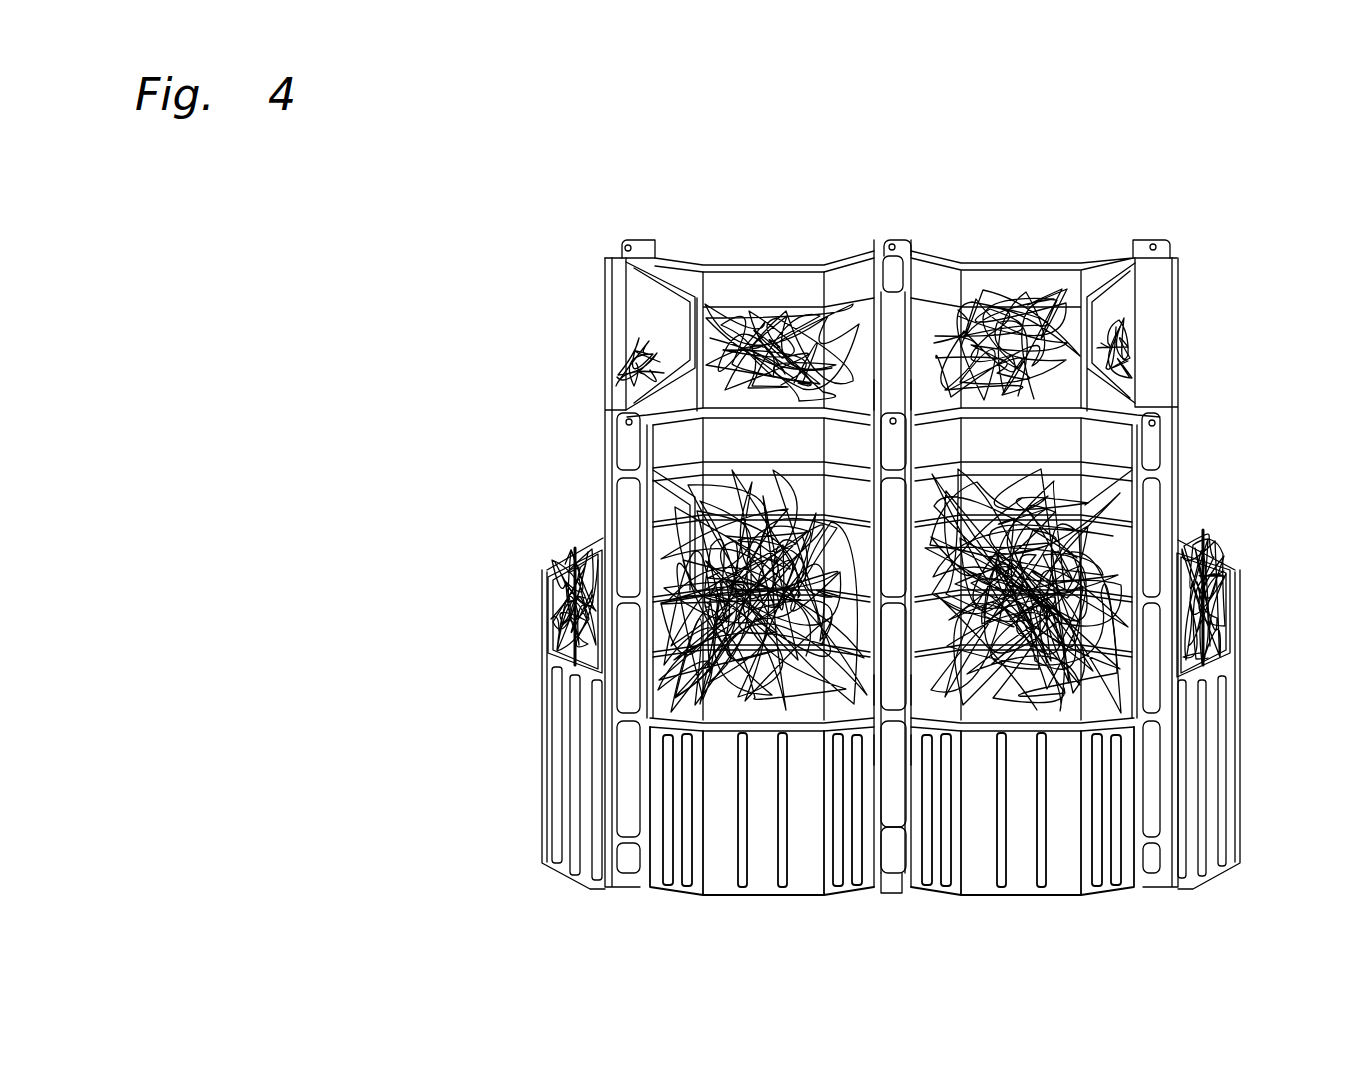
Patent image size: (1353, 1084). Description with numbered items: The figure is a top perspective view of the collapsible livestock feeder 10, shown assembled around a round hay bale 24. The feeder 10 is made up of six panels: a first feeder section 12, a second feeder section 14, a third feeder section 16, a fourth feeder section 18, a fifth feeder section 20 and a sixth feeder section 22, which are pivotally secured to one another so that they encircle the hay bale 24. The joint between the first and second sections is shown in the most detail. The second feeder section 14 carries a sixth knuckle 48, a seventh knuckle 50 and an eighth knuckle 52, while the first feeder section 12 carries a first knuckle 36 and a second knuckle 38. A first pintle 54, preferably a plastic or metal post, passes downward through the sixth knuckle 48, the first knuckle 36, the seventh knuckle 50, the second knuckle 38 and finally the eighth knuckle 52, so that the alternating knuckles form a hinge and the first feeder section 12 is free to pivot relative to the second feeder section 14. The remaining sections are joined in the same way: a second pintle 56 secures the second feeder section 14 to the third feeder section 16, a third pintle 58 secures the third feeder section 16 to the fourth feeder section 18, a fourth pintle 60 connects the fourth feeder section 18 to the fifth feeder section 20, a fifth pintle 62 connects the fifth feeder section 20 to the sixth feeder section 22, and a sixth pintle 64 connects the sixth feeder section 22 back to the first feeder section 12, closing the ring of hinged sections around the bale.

The collapsible livestock feeder 10 is at (1256, 177).
The first feeder section 12 is at (1153, 617).
The second feeder section 14 is at (626, 518).
The third feeder section 16 is at (640, 314).
The fourth feeder section 18 is at (767, 262).
The fifth feeder section 20 is at (1007, 262).
The sixth feeder section 22 is at (1093, 350).
The round hay bale 24 is at (1070, 285).
The first knuckle 36 is at (893, 552).
The second knuckle 38 is at (897, 752).
The sixth knuckle 48 is at (876, 402).
The seventh knuckle 50 is at (880, 690).
The eighth knuckle 52 is at (893, 867).
The first pintle 54 is at (917, 465).
The second pintle 56 is at (627, 422).
The third pintle 58 is at (628, 247).
The fourth pintle 60 is at (893, 243).
The fifth pintle 62 is at (1157, 247).
The sixth pintle 64 is at (1153, 423).